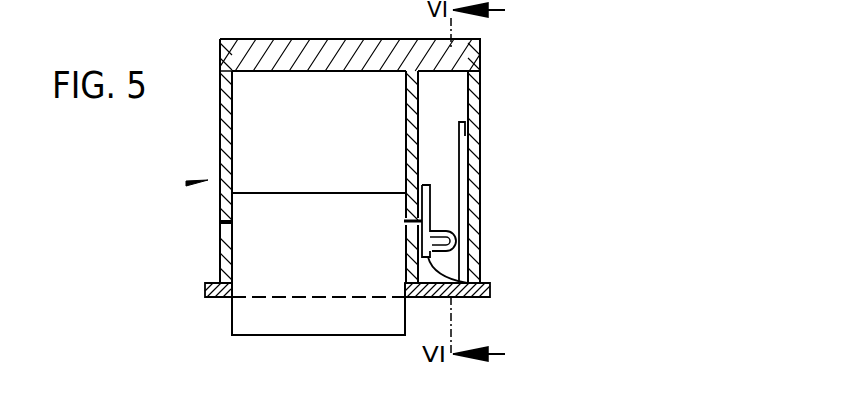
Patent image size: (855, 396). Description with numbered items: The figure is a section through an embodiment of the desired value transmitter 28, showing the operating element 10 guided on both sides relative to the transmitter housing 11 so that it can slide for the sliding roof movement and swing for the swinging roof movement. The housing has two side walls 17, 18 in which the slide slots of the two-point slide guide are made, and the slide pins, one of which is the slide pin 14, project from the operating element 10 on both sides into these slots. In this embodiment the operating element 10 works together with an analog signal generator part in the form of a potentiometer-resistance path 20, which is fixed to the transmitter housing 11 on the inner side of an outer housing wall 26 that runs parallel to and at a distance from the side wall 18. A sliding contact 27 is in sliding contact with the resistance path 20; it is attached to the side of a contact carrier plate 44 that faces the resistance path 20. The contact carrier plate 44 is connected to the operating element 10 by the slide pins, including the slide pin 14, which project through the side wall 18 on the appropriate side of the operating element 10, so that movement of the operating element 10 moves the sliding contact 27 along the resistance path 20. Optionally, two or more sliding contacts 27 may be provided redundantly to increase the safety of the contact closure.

The operating element 10 is at (258, 320).
The transmitter housing 11 is at (280, 55).
The slide pin 14 is at (218, 224).
The side wall 17 is at (224, 126).
The side wall 18 is at (413, 108).
The potentiometer-resistance path 20 is at (464, 139).
The outer housing wall 26 is at (472, 178).
The sliding contact 27 is at (445, 261).
The desired value transmitter 28 is at (187, 183).
The contact carrier plate 44 is at (490, 297).